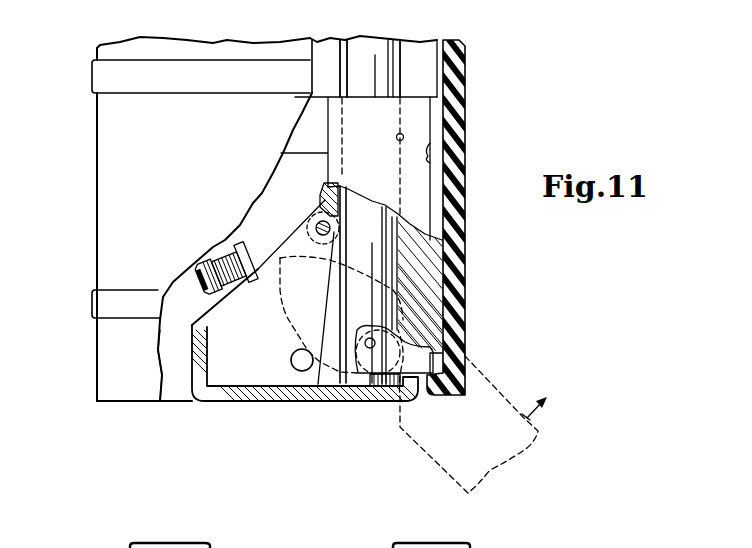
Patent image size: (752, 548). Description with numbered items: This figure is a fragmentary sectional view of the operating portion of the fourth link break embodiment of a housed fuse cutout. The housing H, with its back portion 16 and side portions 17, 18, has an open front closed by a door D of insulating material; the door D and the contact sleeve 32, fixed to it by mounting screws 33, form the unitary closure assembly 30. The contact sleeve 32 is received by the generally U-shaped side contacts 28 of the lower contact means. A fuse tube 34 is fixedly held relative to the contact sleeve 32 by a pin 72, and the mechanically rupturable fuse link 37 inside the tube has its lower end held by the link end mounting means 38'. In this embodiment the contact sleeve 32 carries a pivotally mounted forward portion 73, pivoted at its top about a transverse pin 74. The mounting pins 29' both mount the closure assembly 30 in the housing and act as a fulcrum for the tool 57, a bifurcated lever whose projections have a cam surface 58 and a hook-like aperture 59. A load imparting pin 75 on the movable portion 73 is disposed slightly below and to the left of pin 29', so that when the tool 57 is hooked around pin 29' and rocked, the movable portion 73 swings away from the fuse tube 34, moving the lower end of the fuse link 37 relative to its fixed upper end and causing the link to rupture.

The housing H is at (88, 109).
The door D is at (475, 114).
The back portion 16 is at (97, 207).
The side portion 17 is at (130, 244).
The side portion 18 is at (171, 382).
The side contacts 28 is at (297, 132).
The mounting pins 29' is at (398, 395).
The closure assembly 30 is at (477, 153).
The contact sleeve 32 is at (310, 192).
The mounting screws 33 is at (427, 142).
The fuse tube 34 is at (392, 60).
The fuse link 37 is at (282, 394).
The link end mounting means 38' is at (227, 257).
The tool 57 is at (530, 430).
The cam surface 58 is at (288, 302).
The hook-like aperture 59 is at (368, 337).
The pin 72 is at (396, 137).
The forward portion 73 is at (275, 290).
The transverse pin 74 is at (315, 220).
The load imparting pin 75 is at (295, 352).